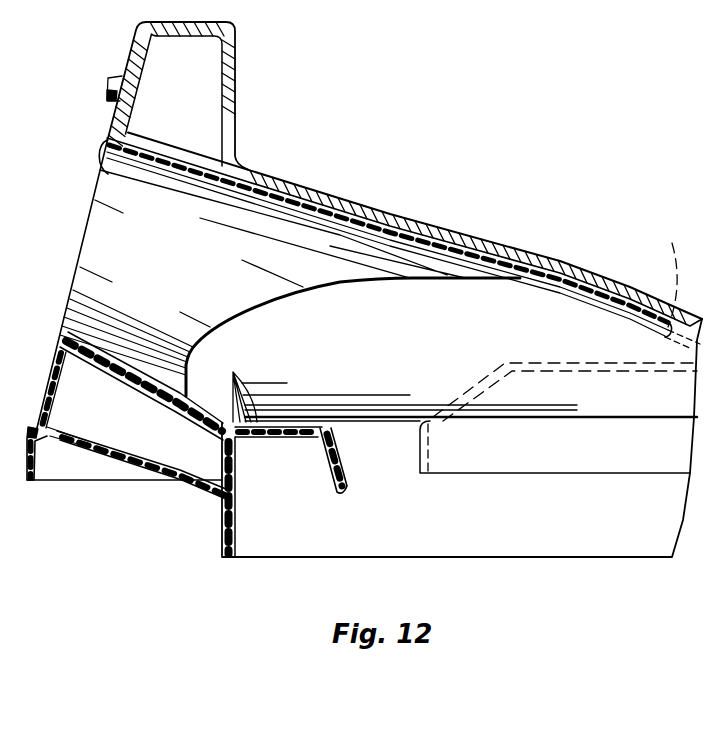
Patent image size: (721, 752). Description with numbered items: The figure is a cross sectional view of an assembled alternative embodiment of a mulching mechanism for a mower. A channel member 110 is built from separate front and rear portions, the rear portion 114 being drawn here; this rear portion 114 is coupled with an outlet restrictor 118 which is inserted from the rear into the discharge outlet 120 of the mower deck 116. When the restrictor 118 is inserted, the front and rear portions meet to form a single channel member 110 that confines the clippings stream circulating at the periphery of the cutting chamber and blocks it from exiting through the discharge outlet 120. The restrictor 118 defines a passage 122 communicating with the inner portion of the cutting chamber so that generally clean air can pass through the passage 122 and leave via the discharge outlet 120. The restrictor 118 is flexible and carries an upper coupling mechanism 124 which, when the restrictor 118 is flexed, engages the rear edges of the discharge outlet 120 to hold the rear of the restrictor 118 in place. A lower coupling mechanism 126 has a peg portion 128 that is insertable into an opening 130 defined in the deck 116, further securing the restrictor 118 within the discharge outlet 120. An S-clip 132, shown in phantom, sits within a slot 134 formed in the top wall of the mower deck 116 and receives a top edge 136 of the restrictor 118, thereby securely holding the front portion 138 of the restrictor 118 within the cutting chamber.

The channel member 110 is at (345, 465).
The rear portion of the channel member 114 is at (331, 473).
The mower deck 116 is at (530, 258).
The outlet restrictor 118 is at (55, 347).
The discharge outlet 120 is at (165, 250).
The passage 122 is at (100, 162).
The upper coupling mechanism 124 is at (99, 89).
The lower coupling mechanism 126 is at (27, 413).
The peg portion 128 is at (50, 437).
The opening 130 is at (66, 445).
The S-clip 132 is at (567, 317).
The slot 134 is at (645, 298).
The top edge of the restrictor 136 is at (636, 314).
The front portion of the restrictor 138 is at (567, 290).